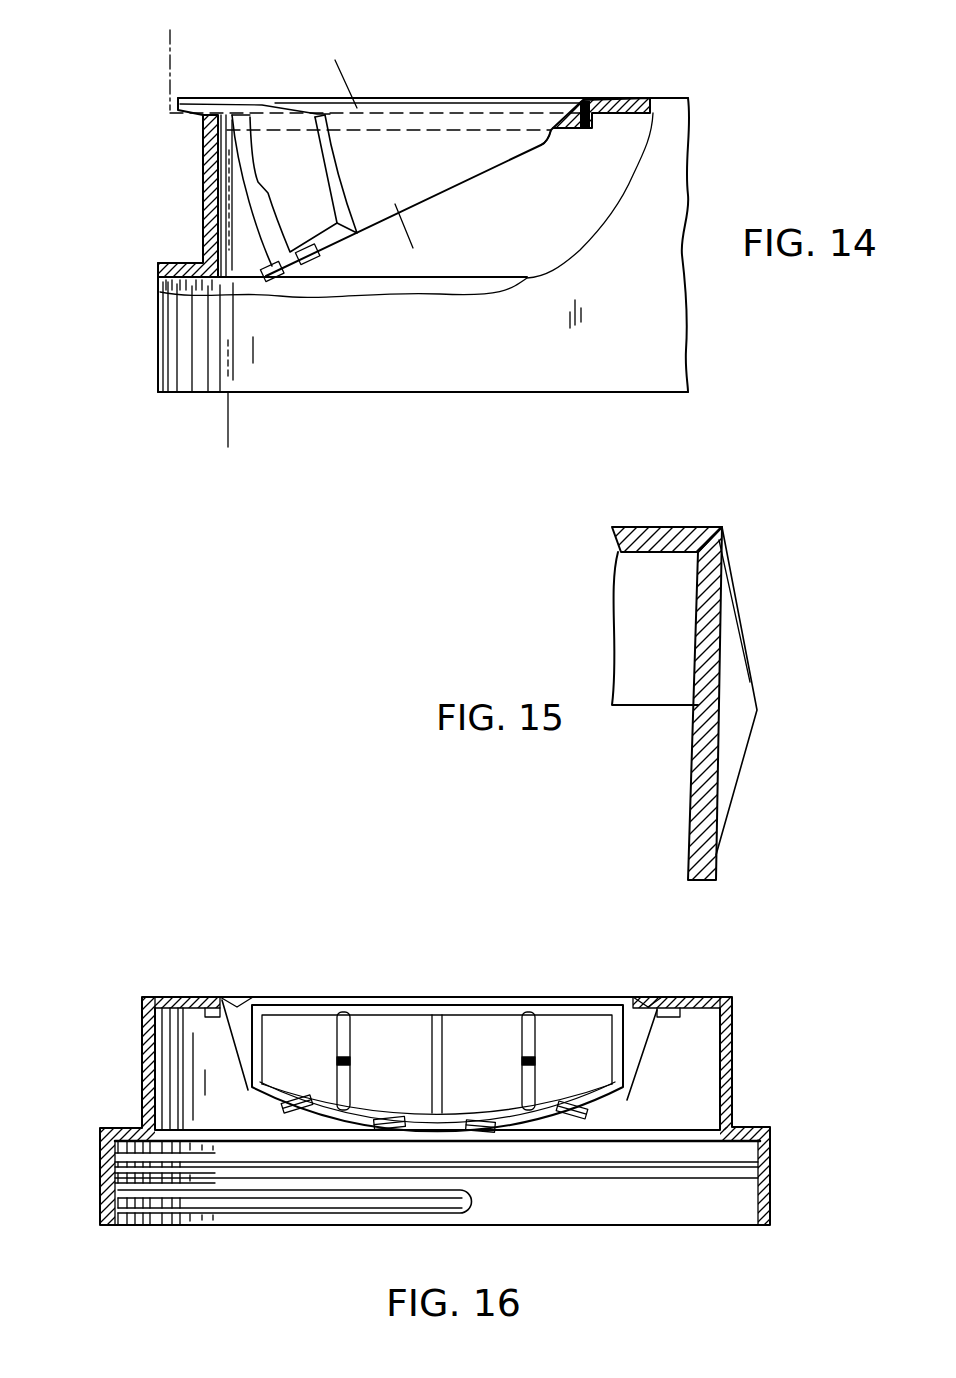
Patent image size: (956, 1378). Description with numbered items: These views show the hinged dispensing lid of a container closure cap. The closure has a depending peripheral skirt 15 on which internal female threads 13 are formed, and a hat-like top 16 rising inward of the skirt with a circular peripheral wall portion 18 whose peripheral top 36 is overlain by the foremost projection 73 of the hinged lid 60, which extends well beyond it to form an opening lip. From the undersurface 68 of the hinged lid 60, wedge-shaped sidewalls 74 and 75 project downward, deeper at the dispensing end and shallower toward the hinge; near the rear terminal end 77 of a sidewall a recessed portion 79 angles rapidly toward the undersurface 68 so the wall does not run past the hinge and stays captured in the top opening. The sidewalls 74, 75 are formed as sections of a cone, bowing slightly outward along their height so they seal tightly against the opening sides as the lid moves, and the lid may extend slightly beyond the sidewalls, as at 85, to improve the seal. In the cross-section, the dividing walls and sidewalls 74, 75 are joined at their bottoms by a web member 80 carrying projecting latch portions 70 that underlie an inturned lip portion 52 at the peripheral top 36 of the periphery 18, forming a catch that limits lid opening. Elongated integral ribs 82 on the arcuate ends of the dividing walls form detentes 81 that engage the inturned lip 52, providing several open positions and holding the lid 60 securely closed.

In FIG. 16, the internal female threads 13 is at (637, 1178).
In FIG. 14, the depending peripheral skirt 15 is at (362, 46).
In FIG. 14, the top 16 is at (205, 27).
In FIG. 14, the peripheral wall portion 18 is at (207, 188).
In FIG. 16, the peripheral wall portion 18 is at (735, 1057).
In FIG. 14, the peripheral top 36 is at (198, 117).
In FIG. 14, the inturned lip portion 52 is at (222, 125).
In FIG. 15, the hinged lid 60 is at (738, 667).
In FIG. 15, the undersurface 68 is at (670, 655).
In FIG. 14, the latch portions 70 is at (312, 262).
In FIG. 16, the latch portions 70 is at (386, 1120).
In FIG. 14, the foremost projection 73 is at (180, 100).
In FIG. 16, the foremost projection 73 is at (270, 997).
In FIG. 16, the sidewall 74 is at (253, 1042).
In FIG. 14, the sidewall 75 is at (463, 162).
In FIG. 15, the sidewall 75 is at (708, 707).
In FIG. 16, the sidewall 75 is at (618, 1043).
In FIG. 14, the rear terminal end 77 is at (527, 147).
In FIG. 14, the recessed portion 79 is at (570, 130).
In FIG. 16, the web member 80 is at (330, 1112).
In FIG. 14, the detentes 81 is at (267, 193).
In FIG. 16, the detentes 81 is at (338, 1062).
In FIG. 14, the elongated integral ribs 82 is at (263, 272).
In FIG. 16, the elongated integral ribs 82 is at (350, 1082).
In FIG. 15, the lid extension 85 is at (725, 542).